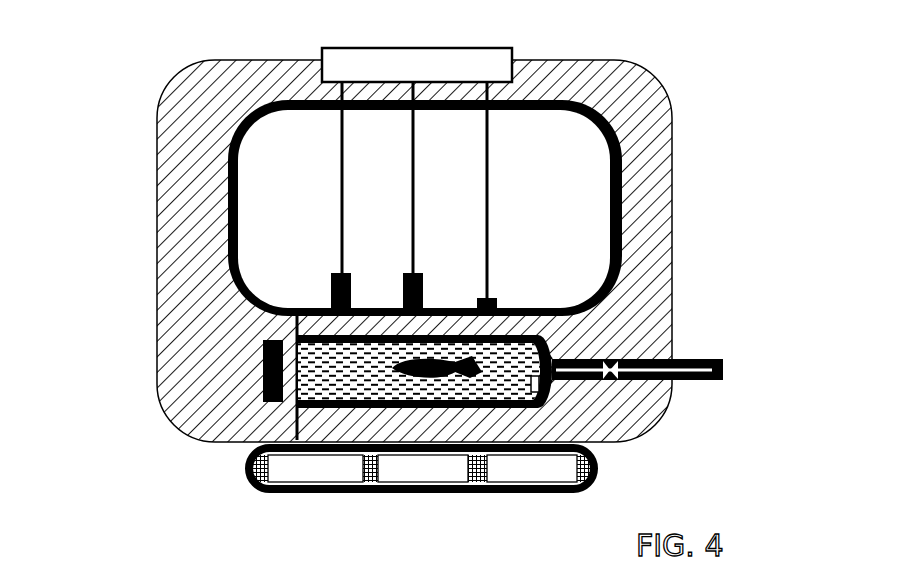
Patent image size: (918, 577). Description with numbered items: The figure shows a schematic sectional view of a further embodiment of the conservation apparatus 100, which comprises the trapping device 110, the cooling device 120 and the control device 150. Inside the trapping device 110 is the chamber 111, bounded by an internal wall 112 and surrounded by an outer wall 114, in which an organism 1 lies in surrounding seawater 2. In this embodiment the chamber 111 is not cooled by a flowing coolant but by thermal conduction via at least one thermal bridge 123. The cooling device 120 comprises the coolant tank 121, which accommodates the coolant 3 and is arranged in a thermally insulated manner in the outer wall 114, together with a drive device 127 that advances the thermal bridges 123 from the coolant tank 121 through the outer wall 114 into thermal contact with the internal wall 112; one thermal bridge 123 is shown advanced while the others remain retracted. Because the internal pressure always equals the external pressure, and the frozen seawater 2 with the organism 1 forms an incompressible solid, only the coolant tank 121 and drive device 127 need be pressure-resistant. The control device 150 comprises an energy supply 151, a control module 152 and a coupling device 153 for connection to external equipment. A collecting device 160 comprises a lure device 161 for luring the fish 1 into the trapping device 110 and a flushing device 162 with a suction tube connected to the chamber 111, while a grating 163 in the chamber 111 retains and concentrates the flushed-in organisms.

The conservation apparatus 100 is at (429, 254).
The trapping device 110 is at (367, 406).
The chamber 111 is at (313, 390).
The internal wall 112 is at (475, 408).
The outer wall 114 is at (640, 72).
The cooling device 120 is at (495, 163).
The coolant tank 121 is at (283, 128).
The thermal bridge 123 is at (487, 302).
The drive device 127 is at (356, 64).
The control device 150 is at (526, 469).
The energy supply 151 is at (315, 468).
The control module 152 is at (423, 468).
The coupling device 153 is at (532, 468).
The collecting device 160 is at (671, 383).
The lure device 161 is at (548, 378).
The flushing device 162 is at (656, 381).
The grating 163 is at (545, 350).
The organism 1 is at (443, 392).
The seawater 2 is at (354, 382).
The coolant 3 is at (289, 218).